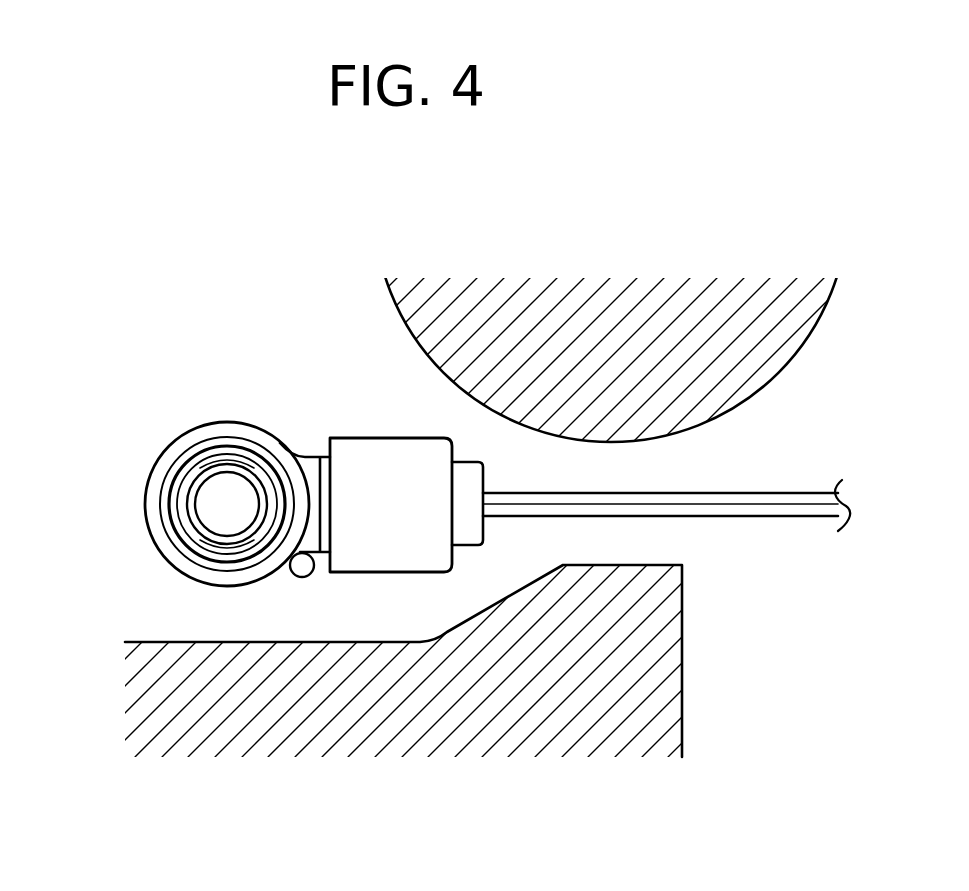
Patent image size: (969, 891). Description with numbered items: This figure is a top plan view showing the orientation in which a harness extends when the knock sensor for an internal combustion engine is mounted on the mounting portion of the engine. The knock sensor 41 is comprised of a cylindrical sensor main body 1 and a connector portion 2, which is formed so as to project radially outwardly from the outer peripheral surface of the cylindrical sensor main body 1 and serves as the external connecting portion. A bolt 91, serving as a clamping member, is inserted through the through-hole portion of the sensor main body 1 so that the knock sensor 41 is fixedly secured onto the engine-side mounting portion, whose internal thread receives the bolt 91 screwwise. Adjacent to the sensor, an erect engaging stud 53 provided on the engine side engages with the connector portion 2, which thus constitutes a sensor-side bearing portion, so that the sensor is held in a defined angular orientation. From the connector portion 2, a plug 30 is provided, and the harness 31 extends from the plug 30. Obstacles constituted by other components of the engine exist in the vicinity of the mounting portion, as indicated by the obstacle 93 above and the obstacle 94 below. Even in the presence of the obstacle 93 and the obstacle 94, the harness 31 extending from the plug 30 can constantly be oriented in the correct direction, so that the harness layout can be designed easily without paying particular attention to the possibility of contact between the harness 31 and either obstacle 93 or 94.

The cylindrical sensor main body 1 is at (146, 517).
The connector portion 2 is at (392, 438).
The plug 30 is at (483, 462).
The harness 31 is at (613, 492).
The knock sensor 41 is at (229, 364).
The engaging stud 53 is at (302, 577).
The bolt 91 is at (205, 540).
The obstacle 93 is at (407, 323).
The obstacle 94 is at (392, 642).